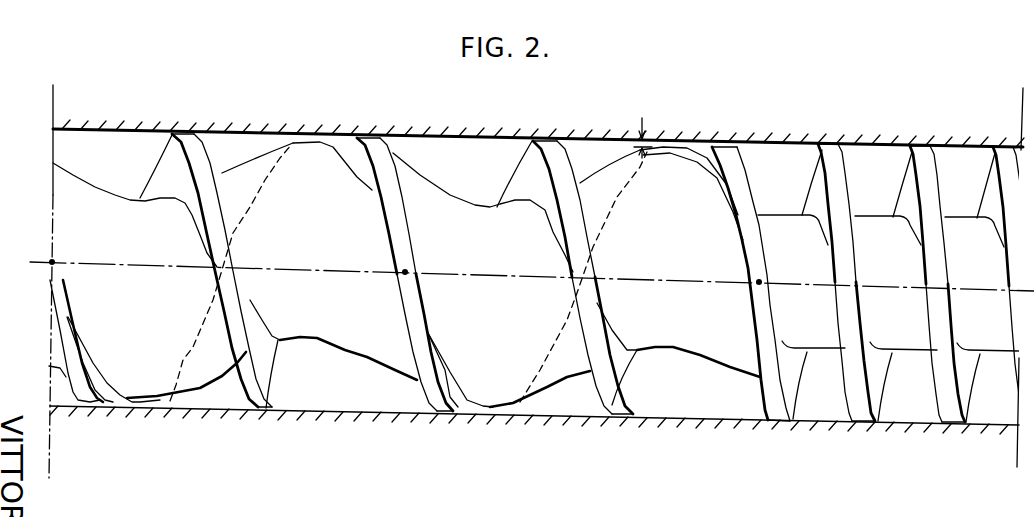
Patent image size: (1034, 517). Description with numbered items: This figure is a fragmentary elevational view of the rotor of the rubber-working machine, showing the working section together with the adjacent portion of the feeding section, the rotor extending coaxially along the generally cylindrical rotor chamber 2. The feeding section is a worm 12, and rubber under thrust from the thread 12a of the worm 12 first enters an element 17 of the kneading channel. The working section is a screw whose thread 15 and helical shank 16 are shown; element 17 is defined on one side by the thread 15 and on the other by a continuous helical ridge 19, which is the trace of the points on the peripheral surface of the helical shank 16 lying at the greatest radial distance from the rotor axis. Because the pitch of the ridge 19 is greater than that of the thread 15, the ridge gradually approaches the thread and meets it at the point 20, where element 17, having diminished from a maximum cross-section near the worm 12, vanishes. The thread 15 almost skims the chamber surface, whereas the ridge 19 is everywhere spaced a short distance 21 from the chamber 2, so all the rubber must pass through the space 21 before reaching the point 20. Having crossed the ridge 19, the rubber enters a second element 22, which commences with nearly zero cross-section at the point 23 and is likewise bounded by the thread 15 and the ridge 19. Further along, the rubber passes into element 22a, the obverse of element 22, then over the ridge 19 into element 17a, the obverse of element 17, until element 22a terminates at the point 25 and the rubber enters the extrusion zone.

The rotor chamber 2 is at (125, 110).
The worm 12 is at (875, 231).
The thread of the worm 12a is at (880, 391).
The thread of the screw 15 is at (528, 168).
The helical shank 16 is at (383, 350).
The element of the kneading channel 17 is at (587, 153).
The element of the kneading channel 17a is at (98, 143).
The continuous helical ridge 19 is at (172, 359).
The point 20 is at (403, 274).
The space 21 is at (644, 146).
The element of the kneading channel 22 is at (443, 155).
The element of the kneading channel 22a is at (107, 401).
The point 23 is at (757, 284).
The point 25 is at (48, 259).